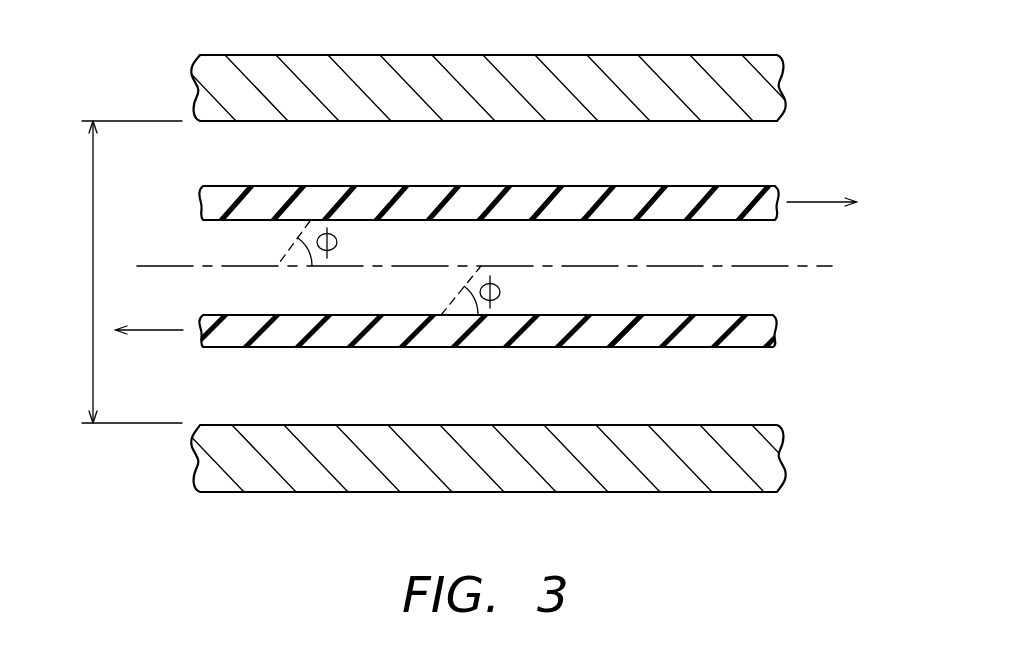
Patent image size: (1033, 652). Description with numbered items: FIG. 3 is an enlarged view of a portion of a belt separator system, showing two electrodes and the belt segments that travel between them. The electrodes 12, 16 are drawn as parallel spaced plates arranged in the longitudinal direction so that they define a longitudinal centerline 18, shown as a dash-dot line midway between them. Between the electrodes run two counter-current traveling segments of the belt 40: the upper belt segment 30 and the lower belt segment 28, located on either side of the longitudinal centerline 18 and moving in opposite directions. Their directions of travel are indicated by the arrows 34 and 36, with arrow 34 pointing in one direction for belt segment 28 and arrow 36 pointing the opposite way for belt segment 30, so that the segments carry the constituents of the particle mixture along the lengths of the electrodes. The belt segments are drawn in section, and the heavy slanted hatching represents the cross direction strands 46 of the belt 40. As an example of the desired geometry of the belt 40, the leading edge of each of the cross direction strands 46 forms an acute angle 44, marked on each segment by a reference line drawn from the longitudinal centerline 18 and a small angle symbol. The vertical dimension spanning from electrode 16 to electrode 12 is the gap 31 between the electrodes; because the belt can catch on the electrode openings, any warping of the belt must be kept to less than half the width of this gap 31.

The electrode 12 is at (777, 485).
The electrode 16 is at (780, 60).
The longitudinal centerline 18 is at (205, 267).
The belt segment 28 is at (750, 348).
The belt segment 30 is at (390, 185).
The gap 31 is at (93, 381).
The arrow 34 is at (143, 330).
The arrow 36 is at (823, 202).
The belt 40 is at (220, 184).
The acute angle 44 is at (338, 242).
The cross direction strands 46 is at (622, 335).